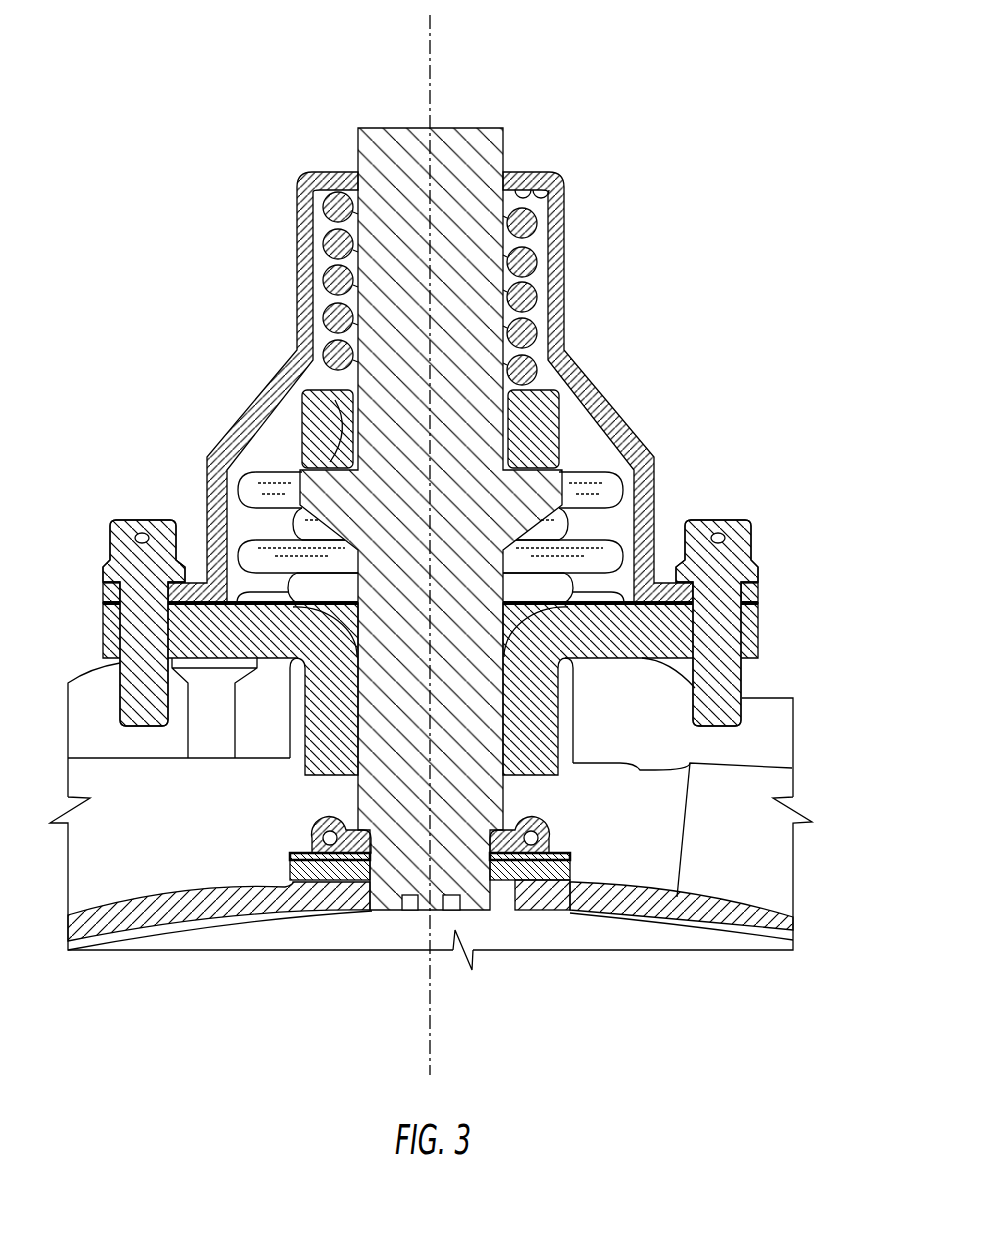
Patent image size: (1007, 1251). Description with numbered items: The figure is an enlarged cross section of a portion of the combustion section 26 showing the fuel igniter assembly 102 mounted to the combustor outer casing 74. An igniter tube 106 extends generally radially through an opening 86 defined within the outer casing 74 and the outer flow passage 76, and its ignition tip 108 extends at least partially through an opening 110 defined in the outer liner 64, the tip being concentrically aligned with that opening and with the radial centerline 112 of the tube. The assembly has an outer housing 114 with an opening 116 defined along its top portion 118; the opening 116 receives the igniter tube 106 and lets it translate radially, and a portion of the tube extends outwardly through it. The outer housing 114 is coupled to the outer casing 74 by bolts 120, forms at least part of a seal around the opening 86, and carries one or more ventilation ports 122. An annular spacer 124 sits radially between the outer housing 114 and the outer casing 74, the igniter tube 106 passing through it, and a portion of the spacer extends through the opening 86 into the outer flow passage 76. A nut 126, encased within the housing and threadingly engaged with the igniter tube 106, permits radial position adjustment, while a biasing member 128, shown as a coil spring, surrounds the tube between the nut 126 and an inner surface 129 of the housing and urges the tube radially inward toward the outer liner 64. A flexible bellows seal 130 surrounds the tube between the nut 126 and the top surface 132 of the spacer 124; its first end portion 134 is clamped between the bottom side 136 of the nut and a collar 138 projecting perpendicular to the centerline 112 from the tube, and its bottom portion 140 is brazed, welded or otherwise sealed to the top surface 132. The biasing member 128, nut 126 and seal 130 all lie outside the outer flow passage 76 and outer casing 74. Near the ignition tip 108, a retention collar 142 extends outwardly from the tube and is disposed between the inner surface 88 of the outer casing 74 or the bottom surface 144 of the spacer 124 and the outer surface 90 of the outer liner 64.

The combustion section 26 is at (807, 683).
The outer liner 64 is at (770, 917).
The outer casing 74 is at (793, 733).
The outer flow passage 76 is at (670, 818).
The opening 86 is at (288, 707).
The inner surface 88 is at (620, 765).
The outer surface 90 is at (143, 910).
The fuel igniter assembly 102 is at (598, 82).
The igniter tube 106 is at (503, 140).
The ignition tip 108 is at (390, 903).
The opening 110 is at (501, 898).
The radial centerline 112 is at (400, 20).
The outer housing 114 is at (655, 418).
The opening 116 is at (353, 170).
The top portion 118 is at (328, 168).
The bolts 120 is at (122, 528).
The ventilation ports 122 is at (300, 222).
The spacer 124 is at (757, 620).
The nut 126 is at (310, 400).
The biasing member 128 is at (530, 262).
The inner surface 129 is at (550, 200).
The flexible seal 130 is at (623, 495).
The top surface 132 is at (257, 607).
The first end portion 134 is at (277, 470).
The bottom side 136 is at (327, 448).
The collar 138 is at (300, 512).
The bottom portion 140 is at (237, 596).
The retention collar 142 is at (362, 838).
The bottom surface 144 is at (320, 777).